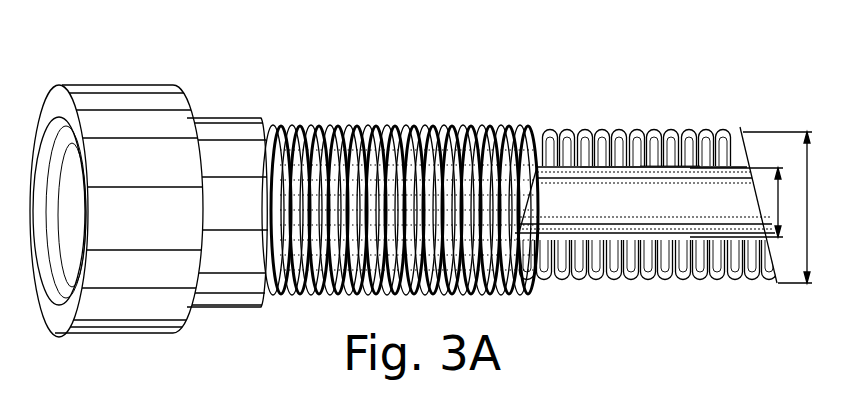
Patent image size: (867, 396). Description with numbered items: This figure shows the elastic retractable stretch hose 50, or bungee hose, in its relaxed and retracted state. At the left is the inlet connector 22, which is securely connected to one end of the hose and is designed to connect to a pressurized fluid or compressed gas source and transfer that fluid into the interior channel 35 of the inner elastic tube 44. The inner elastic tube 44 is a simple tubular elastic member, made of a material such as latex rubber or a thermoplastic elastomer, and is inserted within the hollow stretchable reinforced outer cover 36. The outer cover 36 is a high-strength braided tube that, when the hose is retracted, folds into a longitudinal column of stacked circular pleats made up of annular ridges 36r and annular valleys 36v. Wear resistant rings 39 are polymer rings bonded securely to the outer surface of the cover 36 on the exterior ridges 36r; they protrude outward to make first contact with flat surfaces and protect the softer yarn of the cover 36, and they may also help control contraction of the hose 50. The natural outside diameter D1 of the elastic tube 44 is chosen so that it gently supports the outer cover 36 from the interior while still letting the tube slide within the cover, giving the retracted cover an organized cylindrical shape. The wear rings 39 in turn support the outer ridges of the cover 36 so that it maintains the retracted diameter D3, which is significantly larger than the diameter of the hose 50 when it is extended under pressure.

The inlet connector 22 is at (152, 85).
The stretchable reinforced outer cover 36 is at (342, 126).
The wear resistant rings 39 is at (442, 127).
The inner elastic tube 44 is at (557, 127).
The interior channel 35 is at (550, 223).
The annular ridges 36r is at (652, 127).
The annular valleys 36v is at (681, 168).
The elastic retractable stretch hose 50 is at (654, 104).
The natural outside diameter of elastic tube D1 is at (778, 200).
The retracted outer cover diameter D3 is at (818, 238).